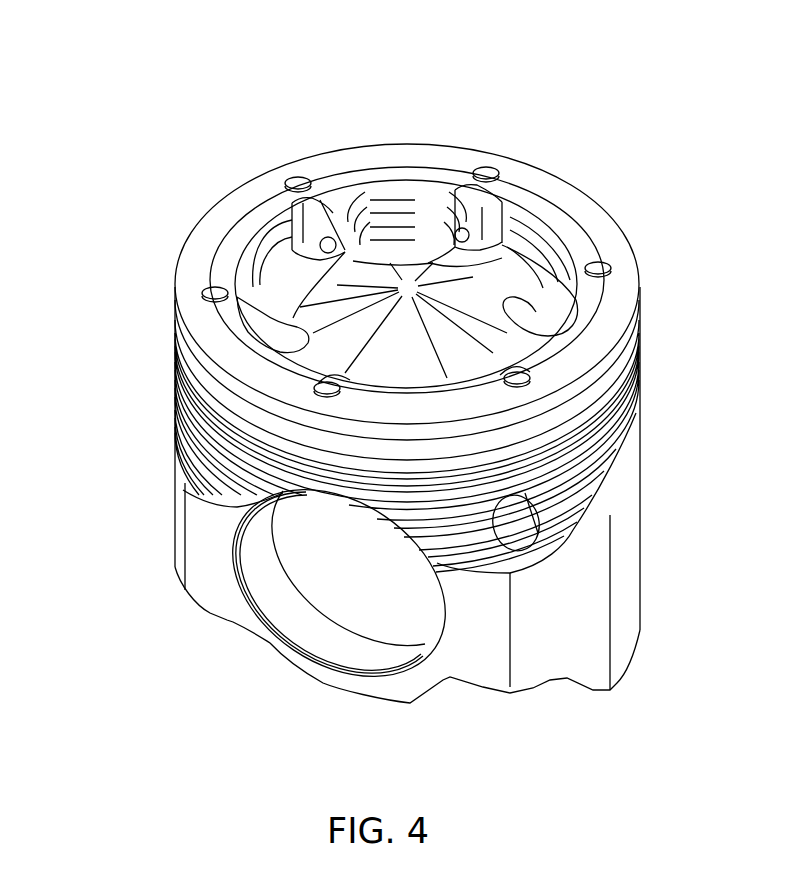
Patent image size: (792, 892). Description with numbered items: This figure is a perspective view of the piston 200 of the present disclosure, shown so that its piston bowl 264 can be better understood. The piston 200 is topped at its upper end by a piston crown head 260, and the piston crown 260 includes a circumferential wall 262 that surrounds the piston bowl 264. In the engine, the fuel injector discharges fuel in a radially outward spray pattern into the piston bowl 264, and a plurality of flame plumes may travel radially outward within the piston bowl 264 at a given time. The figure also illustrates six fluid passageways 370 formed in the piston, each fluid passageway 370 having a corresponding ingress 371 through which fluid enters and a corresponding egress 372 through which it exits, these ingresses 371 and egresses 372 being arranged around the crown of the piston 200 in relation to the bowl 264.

The piston 200 is at (637, 285).
The piston crown head 260 is at (217, 255).
The circumferential wall 262 is at (548, 236).
The piston bowl 264 is at (290, 335).
The fluid passageway 370 is at (474, 217).
The ingress 371 is at (298, 178).
The egress 372 is at (300, 260).